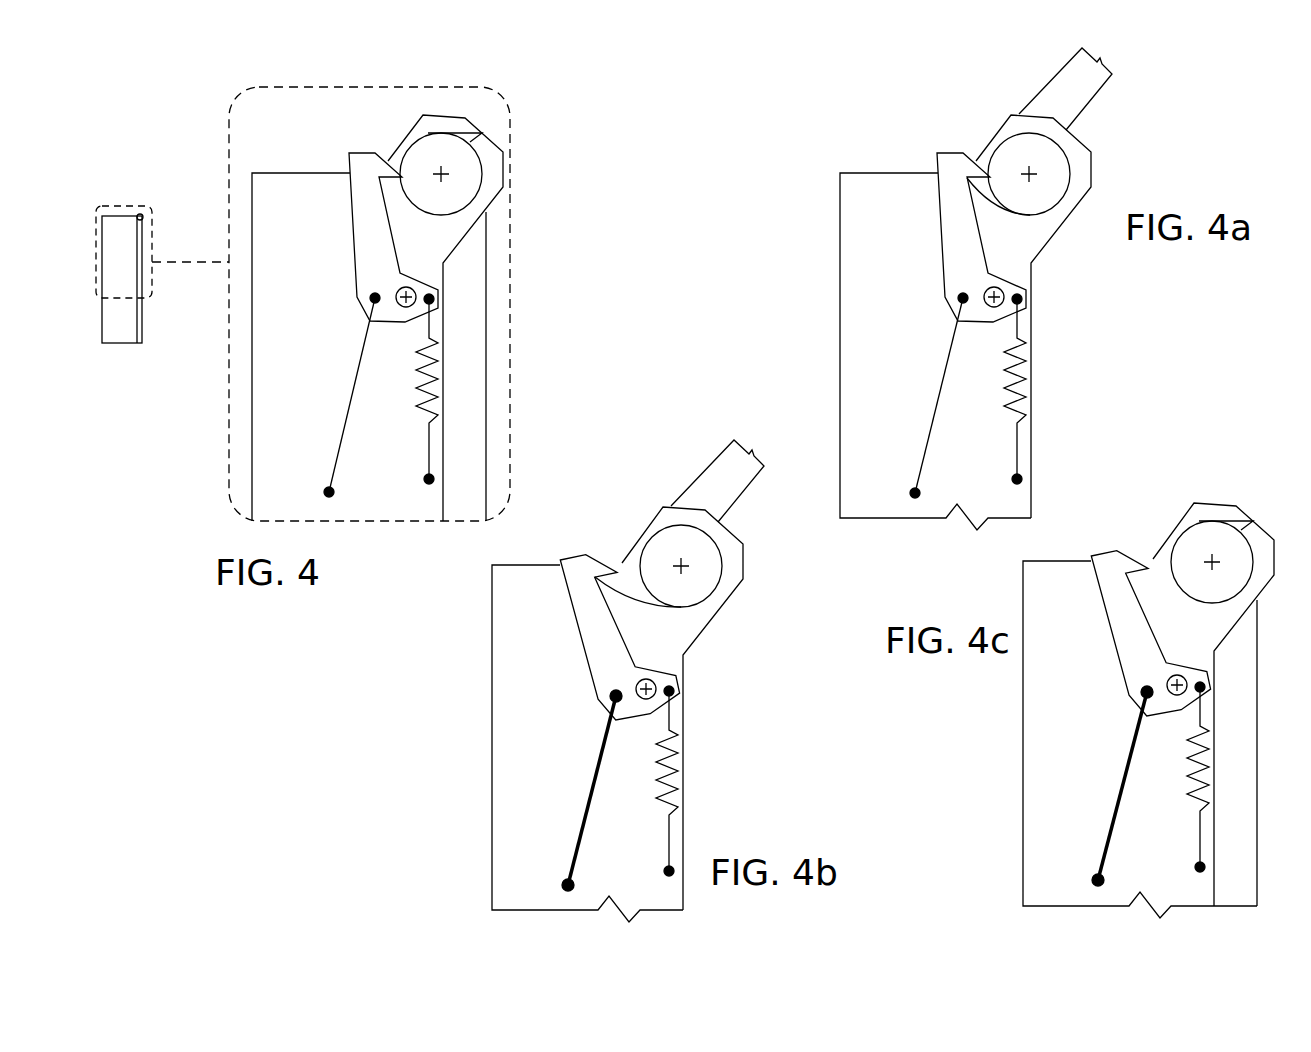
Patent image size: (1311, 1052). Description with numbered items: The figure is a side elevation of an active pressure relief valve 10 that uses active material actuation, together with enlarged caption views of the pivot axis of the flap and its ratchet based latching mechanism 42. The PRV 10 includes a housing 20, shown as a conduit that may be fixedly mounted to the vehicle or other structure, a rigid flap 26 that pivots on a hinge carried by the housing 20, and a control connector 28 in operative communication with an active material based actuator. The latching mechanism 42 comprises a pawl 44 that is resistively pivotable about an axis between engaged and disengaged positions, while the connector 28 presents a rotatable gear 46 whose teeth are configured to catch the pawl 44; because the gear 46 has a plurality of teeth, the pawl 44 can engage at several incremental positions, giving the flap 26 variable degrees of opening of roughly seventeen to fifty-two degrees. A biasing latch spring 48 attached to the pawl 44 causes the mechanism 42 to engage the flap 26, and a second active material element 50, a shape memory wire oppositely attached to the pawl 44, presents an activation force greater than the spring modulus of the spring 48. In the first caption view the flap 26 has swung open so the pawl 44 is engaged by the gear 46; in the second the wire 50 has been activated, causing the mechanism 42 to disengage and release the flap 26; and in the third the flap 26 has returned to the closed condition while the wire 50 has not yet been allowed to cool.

In FIG. 4, the active pressure relief valve 10 is at (166, 201).
In FIG. 4, the housing 20 is at (324, 336).
In FIG. 4, the rigid flap 26 is at (486, 400).
In FIG. 4A, the rigid flap 26 is at (1065, 89).
In FIG. 4B, the rigid flap 26 is at (734, 509).
In FIG. 4, the control connector 28 is at (484, 211).
In FIG. 4, the latching mechanism 42 is at (474, 298).
In FIG. 4A, the pawl 44 is at (910, 215).
In FIG. 4A, the rotatable gear 46 is at (1057, 316).
In FIG. 4A, the biasing latch spring 48 is at (1075, 387).
In FIG. 4A, the second active material element 50 is at (881, 394).
In FIG. 4B, the second active material element 50 is at (535, 790).